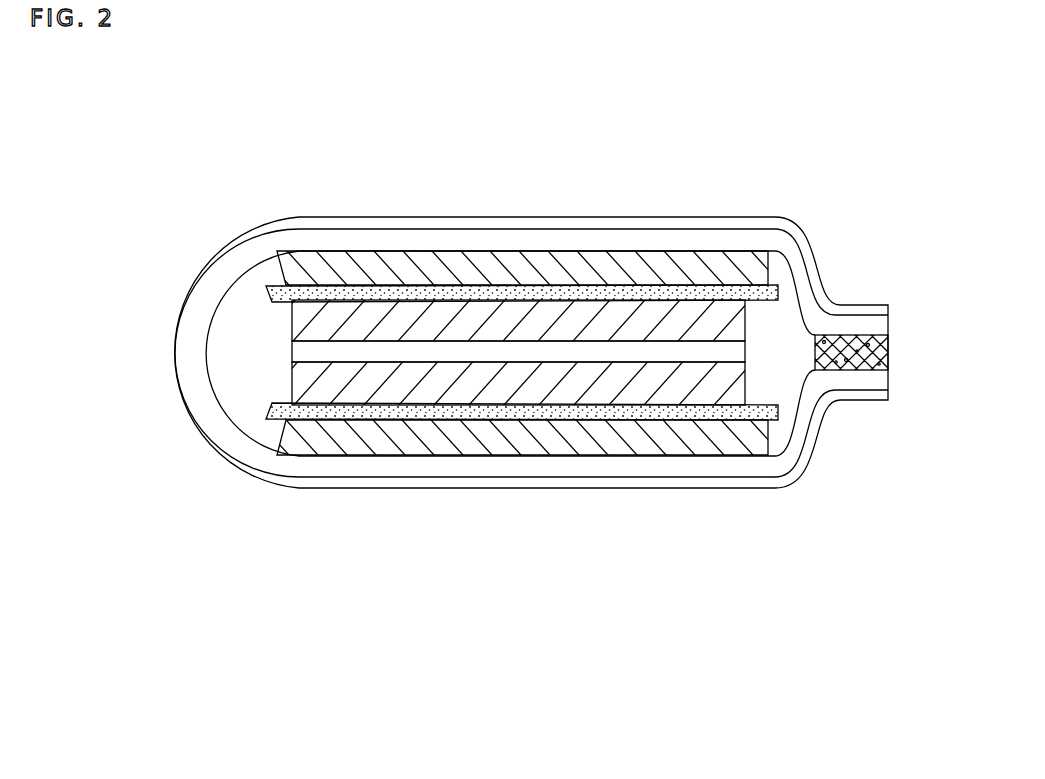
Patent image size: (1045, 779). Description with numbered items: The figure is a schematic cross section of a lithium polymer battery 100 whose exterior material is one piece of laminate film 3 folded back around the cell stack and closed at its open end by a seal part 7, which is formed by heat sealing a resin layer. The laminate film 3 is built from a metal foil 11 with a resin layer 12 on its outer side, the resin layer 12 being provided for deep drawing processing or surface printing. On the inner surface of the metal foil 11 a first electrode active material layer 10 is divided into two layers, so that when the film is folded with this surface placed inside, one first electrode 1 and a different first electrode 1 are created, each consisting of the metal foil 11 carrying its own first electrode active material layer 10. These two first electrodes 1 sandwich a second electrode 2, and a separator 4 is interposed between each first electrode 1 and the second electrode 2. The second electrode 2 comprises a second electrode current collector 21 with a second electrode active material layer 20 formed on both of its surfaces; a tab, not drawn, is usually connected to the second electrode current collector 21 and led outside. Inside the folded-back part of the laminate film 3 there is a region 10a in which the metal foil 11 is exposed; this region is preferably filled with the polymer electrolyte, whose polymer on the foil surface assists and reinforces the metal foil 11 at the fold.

The lithium polymer battery 100 is at (538, 175).
The first electrode 1 is at (462, 97).
The second electrode 2 is at (103, 267).
The laminate film 3 is at (462, 96).
The separator 4 is at (710, 292).
The seal part 7 is at (880, 348).
The first electrode active material layer 10 is at (412, 245).
The region in which the metal foil is exposed 10a is at (207, 381).
The metal foil 11 is at (377, 238).
The resin layer 12 is at (345, 220).
The second electrode active material layer 20 is at (292, 322).
The second electrode current collector 21 is at (292, 352).